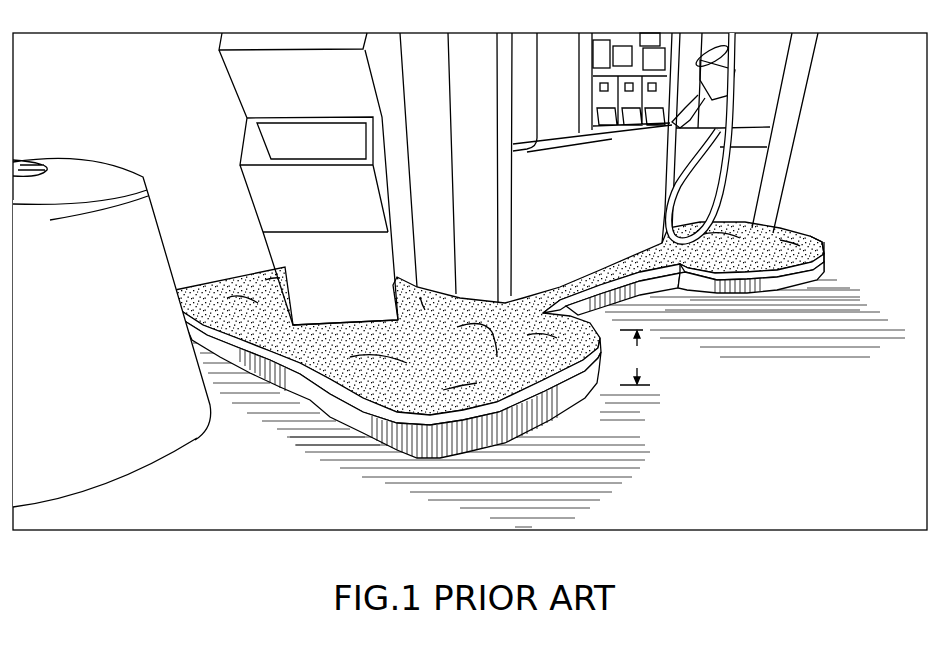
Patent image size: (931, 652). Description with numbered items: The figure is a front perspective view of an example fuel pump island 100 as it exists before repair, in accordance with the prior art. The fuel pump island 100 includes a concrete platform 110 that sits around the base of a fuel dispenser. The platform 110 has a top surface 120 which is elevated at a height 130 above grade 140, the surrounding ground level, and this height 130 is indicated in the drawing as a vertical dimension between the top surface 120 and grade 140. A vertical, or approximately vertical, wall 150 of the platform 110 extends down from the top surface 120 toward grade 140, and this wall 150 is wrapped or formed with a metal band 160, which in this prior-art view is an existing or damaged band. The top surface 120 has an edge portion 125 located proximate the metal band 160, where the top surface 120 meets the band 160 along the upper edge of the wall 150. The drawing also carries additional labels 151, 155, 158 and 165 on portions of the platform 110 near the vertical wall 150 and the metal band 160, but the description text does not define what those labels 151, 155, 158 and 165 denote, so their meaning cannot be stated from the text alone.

The fuel pump island 100 is at (542, 374).
The concrete platform 110 is at (307, 348).
The top surface 120 is at (375, 385).
The edge portion 125 is at (820, 242).
The height 130 is at (635, 357).
The grade 140 is at (620, 423).
The vertical wall 150 is at (427, 432).
The side face of connecting strip 151 is at (640, 300).
The side face of extension pad 155 is at (763, 288).
The top edge of connecting strip 158 is at (677, 288).
The metal band 160 is at (800, 268).
The top surface of extension pad 165 is at (815, 265).